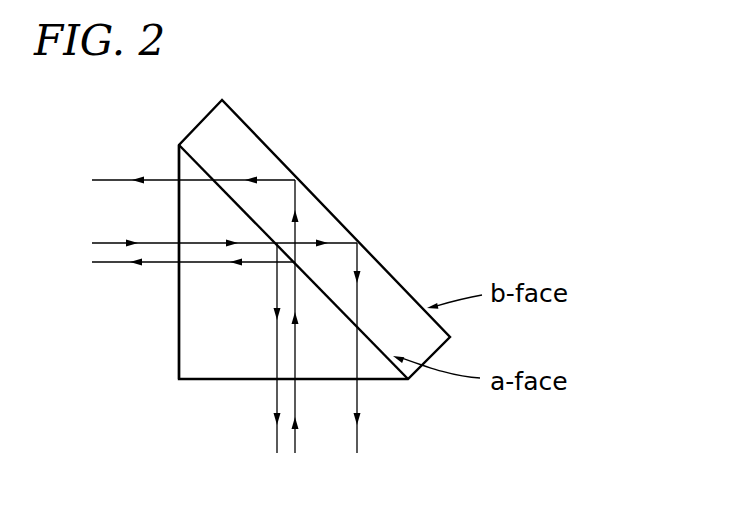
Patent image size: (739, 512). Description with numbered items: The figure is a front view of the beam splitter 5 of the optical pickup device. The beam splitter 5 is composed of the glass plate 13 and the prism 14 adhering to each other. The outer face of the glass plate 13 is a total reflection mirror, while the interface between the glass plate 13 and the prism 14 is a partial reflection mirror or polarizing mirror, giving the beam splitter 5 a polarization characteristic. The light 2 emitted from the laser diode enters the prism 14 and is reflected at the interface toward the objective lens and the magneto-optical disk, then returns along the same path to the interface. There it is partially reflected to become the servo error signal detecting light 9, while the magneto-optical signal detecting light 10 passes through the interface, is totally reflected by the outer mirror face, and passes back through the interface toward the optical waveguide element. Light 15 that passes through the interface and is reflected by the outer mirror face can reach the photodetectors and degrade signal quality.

The beam splitter 5 is at (383, 210).
The glass plate 13 is at (238, 142).
The prism 14 is at (188, 333).
The light 15 is at (112, 178).
The servo error signal detecting light 9 is at (273, 394).
The light 2 is at (297, 403).
The magneto-optical signal detecting light 10 is at (358, 402).